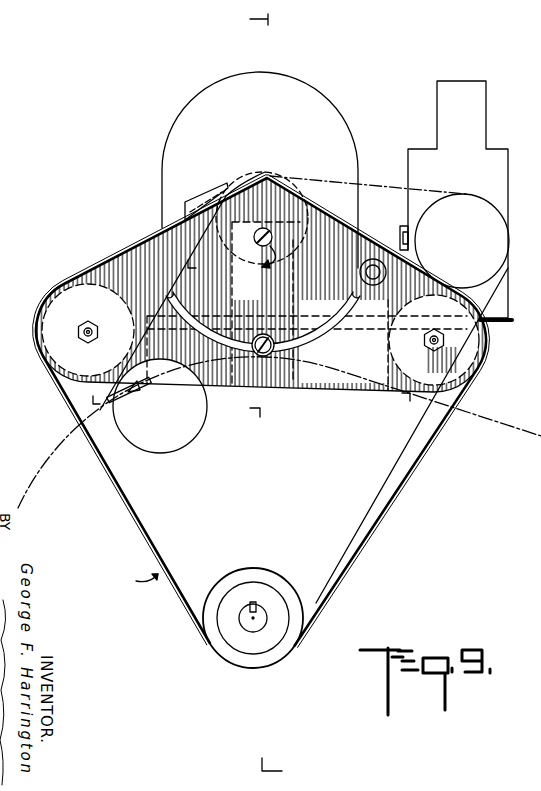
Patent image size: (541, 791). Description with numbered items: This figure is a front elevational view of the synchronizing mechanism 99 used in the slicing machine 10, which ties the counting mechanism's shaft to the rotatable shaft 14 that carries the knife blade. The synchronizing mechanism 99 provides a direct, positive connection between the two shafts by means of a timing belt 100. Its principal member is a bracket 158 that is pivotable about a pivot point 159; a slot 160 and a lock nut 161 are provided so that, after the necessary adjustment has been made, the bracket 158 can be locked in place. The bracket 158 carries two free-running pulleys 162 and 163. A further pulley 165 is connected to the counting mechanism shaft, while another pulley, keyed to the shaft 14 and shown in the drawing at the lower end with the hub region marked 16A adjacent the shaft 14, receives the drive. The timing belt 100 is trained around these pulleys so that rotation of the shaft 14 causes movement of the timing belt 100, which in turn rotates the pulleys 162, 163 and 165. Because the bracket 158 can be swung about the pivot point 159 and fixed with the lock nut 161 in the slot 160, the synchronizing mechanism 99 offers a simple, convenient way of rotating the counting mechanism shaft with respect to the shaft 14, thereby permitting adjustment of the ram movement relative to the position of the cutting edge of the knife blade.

The slicing machine 10 is at (255, 395).
The rotatable shaft 14 is at (256, 616).
The drive pulley 16A is at (272, 650).
The synchronizing mechanism 99 is at (138, 570).
The timing belt 100 is at (372, 521).
The bracket 158 is at (167, 248).
The pivot point 159 is at (262, 232).
The slot 160 is at (327, 333).
The lock nut 161 is at (262, 333).
The free-running pulley 162 is at (56, 361).
The free-running pulley 163 is at (472, 366).
The pulley 165 is at (273, 177).